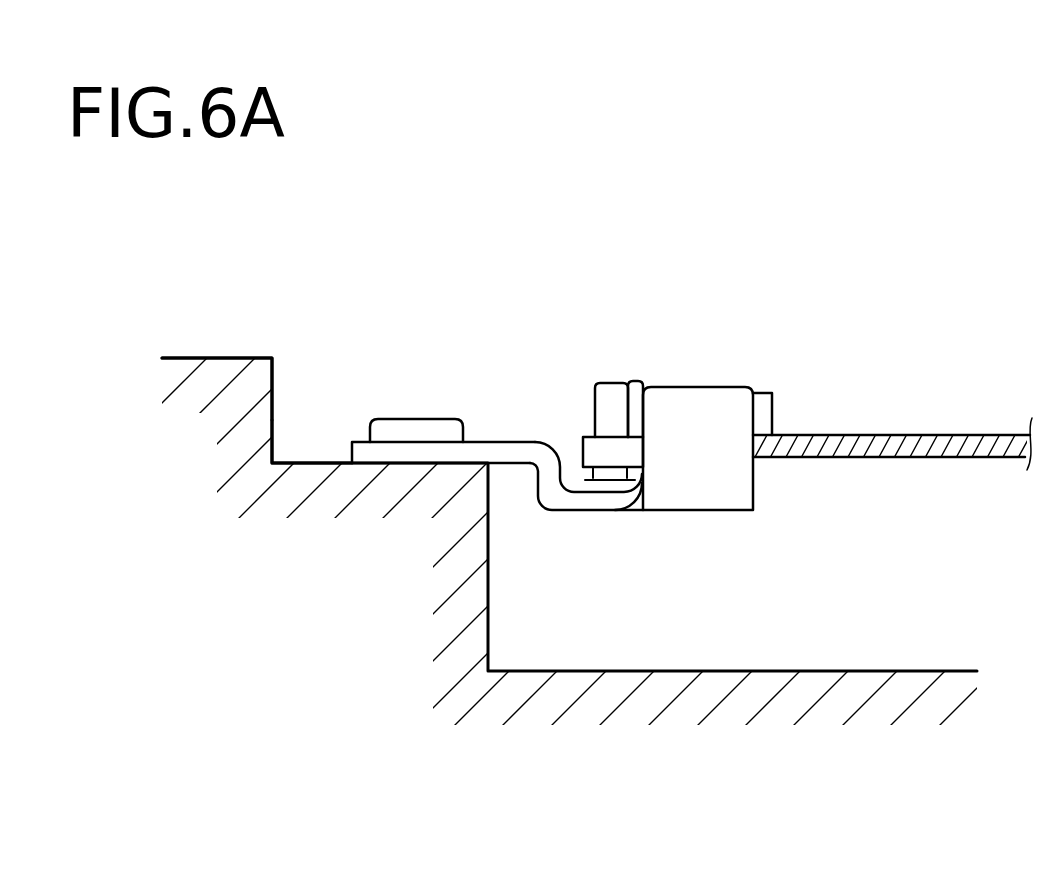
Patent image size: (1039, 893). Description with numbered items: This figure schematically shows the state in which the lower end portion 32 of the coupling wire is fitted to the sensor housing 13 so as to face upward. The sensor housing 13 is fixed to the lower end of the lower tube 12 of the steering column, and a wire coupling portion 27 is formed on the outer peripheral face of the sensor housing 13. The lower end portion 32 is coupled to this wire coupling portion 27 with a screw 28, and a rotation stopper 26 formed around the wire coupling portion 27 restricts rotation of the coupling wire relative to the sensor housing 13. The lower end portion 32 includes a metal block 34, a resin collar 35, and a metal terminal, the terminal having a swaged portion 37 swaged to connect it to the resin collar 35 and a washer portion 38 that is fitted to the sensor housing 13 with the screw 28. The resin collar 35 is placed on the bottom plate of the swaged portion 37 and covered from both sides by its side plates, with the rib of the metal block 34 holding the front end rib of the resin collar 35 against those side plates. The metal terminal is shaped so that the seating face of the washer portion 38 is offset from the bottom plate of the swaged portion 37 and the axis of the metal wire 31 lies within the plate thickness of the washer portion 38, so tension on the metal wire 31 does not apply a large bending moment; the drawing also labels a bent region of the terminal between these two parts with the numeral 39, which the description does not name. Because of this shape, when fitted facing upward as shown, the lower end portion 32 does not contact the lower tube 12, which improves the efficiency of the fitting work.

The lower tube 12 is at (822, 670).
The sensor housing 13 is at (258, 285).
The rotation stopper 26 is at (214, 357).
The wire coupling portion 27 is at (312, 462).
The screw 28 is at (415, 418).
The metal wire 31 is at (876, 435).
The lower end portion 32 is at (667, 312).
The metal block 34 is at (594, 405).
The resin collar 35 is at (633, 383).
The swaged portion 37 is at (722, 387).
The washer portion 38 is at (479, 441).
The bent portion 39 is at (535, 467).